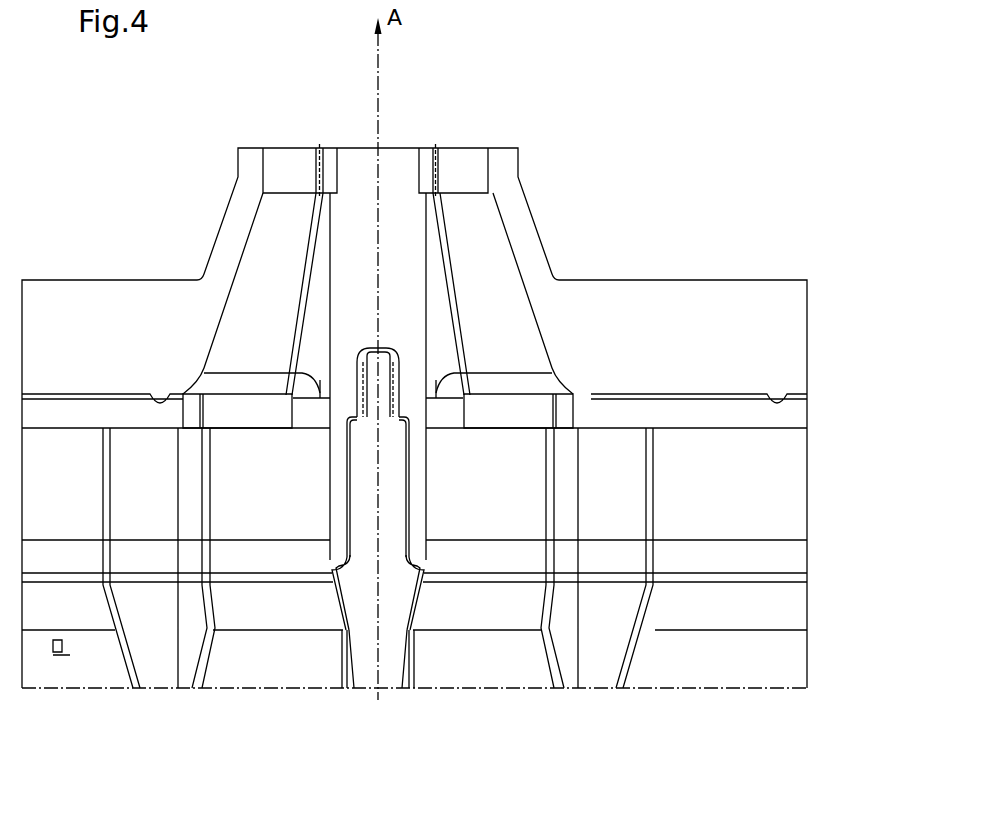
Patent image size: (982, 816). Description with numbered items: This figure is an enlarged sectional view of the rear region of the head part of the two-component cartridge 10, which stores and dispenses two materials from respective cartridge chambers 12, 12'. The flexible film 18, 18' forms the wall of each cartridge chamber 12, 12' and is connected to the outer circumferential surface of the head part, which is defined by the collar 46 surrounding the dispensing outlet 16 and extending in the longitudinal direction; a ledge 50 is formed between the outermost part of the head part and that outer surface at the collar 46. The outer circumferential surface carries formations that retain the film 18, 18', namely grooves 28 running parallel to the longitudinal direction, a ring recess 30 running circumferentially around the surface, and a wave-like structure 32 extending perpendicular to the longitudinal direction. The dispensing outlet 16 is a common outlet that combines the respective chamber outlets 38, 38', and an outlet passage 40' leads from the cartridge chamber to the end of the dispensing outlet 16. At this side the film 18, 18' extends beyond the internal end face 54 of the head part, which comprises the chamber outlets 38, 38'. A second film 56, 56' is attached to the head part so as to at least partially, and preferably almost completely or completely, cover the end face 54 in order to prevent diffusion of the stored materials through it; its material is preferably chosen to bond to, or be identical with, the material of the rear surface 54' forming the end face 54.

The two-component cartridge 10 is at (625, 191).
The cartridge chamber 12 is at (414, 692).
The cartridge chamber 12' is at (613, 693).
The dispensing outlet 16 is at (412, 126).
The film 18 is at (358, 693).
The film 18' is at (397, 693).
The grooves 28 is at (160, 513).
The ring recess 30 is at (422, 575).
The wave-like structure 32 is at (403, 460).
The chamber outlet 38 is at (253, 233).
The chamber outlet 38' is at (520, 294).
The outlet passage 40' is at (396, 132).
The collar 46 is at (56, 483).
The ledge 50 is at (399, 362).
The internal end face 54 is at (106, 308).
The rear surface 54' is at (710, 308).
The second film 56 is at (181, 320).
The second film 56' is at (578, 320).